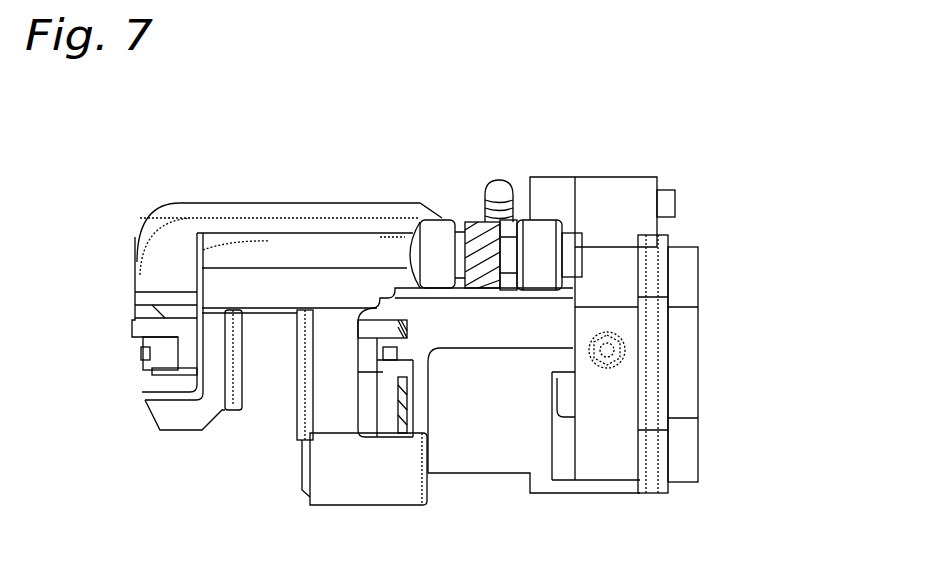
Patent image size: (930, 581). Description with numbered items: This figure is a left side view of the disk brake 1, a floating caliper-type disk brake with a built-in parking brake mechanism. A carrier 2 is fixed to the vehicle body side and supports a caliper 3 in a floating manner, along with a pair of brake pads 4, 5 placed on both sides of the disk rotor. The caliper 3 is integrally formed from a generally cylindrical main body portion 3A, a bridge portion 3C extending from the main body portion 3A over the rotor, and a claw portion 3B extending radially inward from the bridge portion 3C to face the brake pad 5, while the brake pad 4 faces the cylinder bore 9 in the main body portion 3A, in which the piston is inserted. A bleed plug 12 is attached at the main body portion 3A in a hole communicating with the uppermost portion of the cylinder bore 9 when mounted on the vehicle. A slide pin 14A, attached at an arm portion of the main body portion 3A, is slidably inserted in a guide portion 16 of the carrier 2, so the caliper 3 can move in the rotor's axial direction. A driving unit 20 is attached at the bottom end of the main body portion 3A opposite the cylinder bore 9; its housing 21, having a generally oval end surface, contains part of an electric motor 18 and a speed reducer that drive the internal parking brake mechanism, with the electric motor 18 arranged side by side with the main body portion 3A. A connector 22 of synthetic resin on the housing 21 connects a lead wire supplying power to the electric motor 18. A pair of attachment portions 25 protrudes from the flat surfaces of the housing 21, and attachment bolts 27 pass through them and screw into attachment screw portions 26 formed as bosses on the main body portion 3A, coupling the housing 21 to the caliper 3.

The disk brake 1 is at (740, 166).
The carrier 2 is at (306, 516).
The caliper 3 is at (364, 190).
The main body portion 3A is at (493, 330).
The claw portion 3B is at (152, 272).
The bridge portion 3C is at (290, 202).
The brake pad 4 is at (295, 397).
The brake pad 5 is at (235, 417).
The cylinder bore 9 is at (370, 420).
The bleed plug 12 is at (500, 178).
The slide pin 14A is at (575, 240).
The guide portion 16 is at (243, 257).
The electric motor 18 is at (500, 450).
The driving unit 20 is at (724, 398).
The housing 21 is at (688, 437).
The connector 22 is at (618, 333).
The attachment portions 25 is at (630, 198).
The attachment screw portions 26 is at (553, 197).
The attachment bolts 27 is at (668, 202).